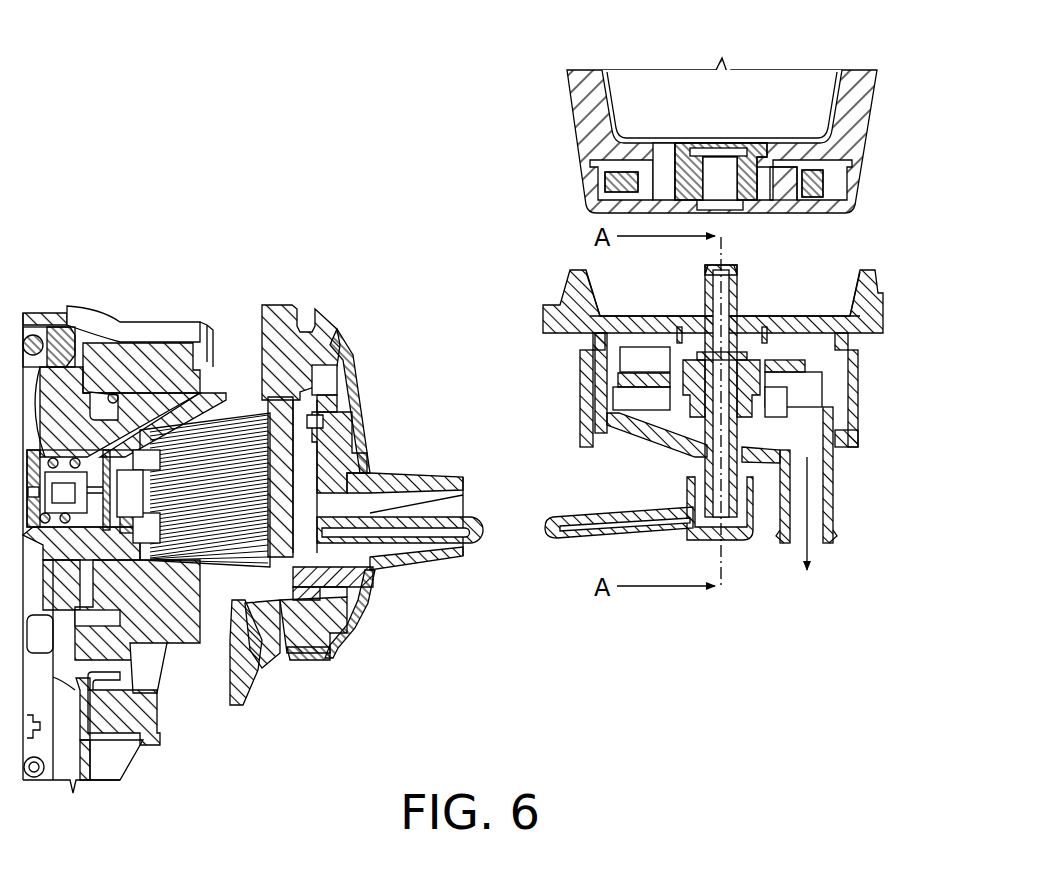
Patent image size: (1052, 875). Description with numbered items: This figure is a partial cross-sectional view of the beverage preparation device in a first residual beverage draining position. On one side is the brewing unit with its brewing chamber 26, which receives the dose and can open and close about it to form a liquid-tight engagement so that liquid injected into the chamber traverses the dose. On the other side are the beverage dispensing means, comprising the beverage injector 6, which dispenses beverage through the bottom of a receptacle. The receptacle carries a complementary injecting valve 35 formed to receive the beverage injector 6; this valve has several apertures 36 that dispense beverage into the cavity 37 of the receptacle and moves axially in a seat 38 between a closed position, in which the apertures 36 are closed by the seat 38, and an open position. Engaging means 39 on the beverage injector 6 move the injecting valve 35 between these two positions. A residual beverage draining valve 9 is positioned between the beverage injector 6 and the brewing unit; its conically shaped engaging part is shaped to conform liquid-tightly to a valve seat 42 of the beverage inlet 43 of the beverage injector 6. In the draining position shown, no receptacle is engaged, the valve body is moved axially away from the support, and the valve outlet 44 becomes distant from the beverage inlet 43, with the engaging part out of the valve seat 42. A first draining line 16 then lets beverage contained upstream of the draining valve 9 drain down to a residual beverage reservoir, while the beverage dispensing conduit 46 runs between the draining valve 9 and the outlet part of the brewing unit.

The beverage injector 6 is at (737, 292).
The residual beverage draining valve 9 is at (785, 428).
The first draining line 16 is at (814, 540).
The brewing chamber 26 is at (248, 400).
The injecting valve 35 is at (697, 148).
The apertures 36 is at (715, 175).
The cavity 37 is at (630, 84).
The seat 38 is at (770, 175).
The engaging means 39 is at (730, 266).
The valve seat 42 is at (778, 378).
The beverage inlet 43 is at (688, 336).
The valve outlet 44 is at (690, 393).
The beverage dispensing conduit 46 is at (580, 527).